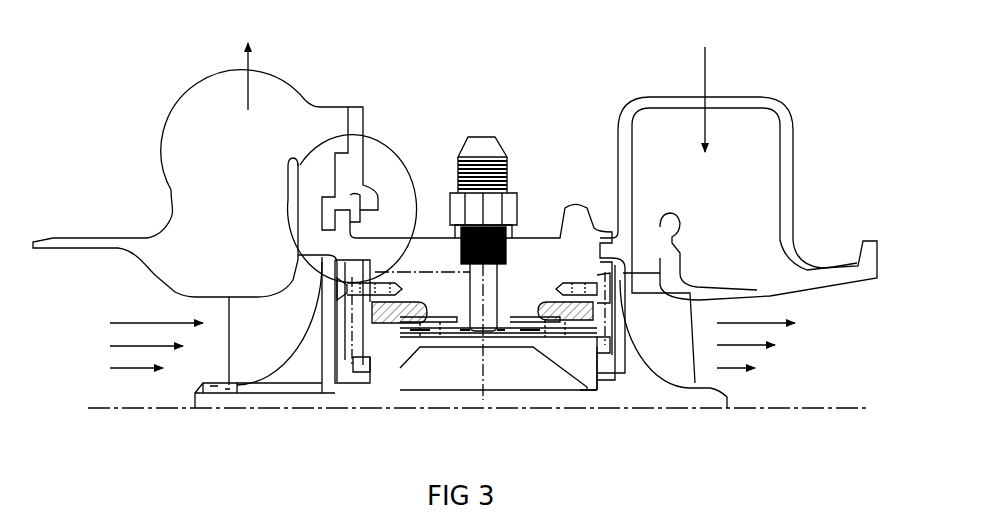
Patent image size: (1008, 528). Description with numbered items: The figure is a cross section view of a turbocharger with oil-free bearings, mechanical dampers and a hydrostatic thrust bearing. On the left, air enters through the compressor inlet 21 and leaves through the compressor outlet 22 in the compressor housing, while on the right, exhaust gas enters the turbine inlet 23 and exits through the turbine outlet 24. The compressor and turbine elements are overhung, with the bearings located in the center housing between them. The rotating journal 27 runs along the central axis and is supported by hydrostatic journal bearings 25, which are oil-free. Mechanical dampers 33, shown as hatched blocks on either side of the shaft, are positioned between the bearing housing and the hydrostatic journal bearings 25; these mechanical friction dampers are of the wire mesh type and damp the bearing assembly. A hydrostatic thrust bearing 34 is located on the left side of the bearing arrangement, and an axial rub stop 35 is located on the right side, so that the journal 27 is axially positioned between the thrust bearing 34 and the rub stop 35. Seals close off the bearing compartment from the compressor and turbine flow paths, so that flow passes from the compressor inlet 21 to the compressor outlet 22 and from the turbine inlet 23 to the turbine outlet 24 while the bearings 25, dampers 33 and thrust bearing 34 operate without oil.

The compressor inlet 21 is at (160, 332).
The compressor outlet 22 is at (228, 118).
The turbine inlet 23 is at (723, 168).
The turbine outlet 24 is at (765, 332).
The hydrostatic journal bearing 25 is at (436, 332).
The rotating journal 27 is at (513, 345).
The mechanical damper 33 is at (407, 313).
The hydrostatic thrust bearing 34 is at (370, 370).
The axial rub stop 35 is at (600, 350).